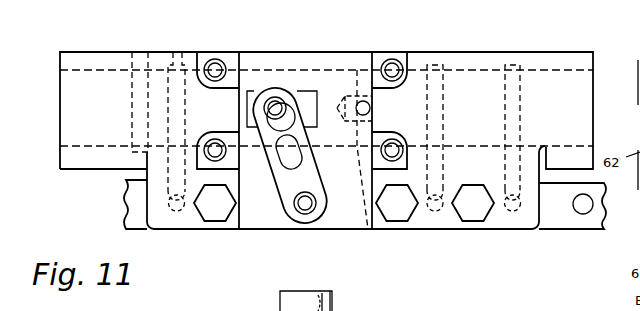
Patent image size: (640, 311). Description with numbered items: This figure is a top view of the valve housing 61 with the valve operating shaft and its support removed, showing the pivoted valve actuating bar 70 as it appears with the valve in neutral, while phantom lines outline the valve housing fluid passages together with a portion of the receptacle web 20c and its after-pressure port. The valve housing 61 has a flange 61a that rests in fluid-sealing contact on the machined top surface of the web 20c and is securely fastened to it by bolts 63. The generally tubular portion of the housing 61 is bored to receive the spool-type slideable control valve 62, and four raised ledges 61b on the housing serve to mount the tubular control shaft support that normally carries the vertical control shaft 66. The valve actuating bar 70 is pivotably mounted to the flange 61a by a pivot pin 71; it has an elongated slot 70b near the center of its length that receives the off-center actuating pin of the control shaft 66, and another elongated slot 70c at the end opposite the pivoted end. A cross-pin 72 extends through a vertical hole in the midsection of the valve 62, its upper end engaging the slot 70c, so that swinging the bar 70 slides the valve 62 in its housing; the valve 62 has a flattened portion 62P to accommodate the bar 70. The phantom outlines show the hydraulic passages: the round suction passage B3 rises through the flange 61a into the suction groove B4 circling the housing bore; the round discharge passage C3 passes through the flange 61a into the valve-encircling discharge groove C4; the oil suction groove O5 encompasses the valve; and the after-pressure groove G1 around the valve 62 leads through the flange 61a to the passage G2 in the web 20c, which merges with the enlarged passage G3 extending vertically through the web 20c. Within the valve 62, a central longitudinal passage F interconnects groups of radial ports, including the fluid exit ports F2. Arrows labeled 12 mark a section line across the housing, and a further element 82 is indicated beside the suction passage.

The section line 12 is at (118, 108).
The valve housing 61 is at (78, 167).
The flange of the valve housing 61a is at (160, 218).
The raised ledges 61b is at (233, 64).
The spool-type slideable control valve 62 is at (294, 80).
The flattened portion of the valve 62P is at (253, 91).
The bolts 63 is at (218, 213).
The valve actuating bar 70 is at (316, 192).
The elongated slot 70b is at (292, 163).
The elongated slot 70c is at (287, 118).
The pivot pin 71 is at (306, 208).
The cross-pin 72 is at (276, 102).
The stop member 82 is at (174, 64).
The web 20c is at (135, 212).
The control shaft 66 is at (280, 308).
The oil suction groove O5 is at (137, 94).
The round passage B3 is at (181, 208).
The suction groove B4 is at (175, 96).
The round passage C3 is at (437, 212).
The valve encircling discharge groove C4 is at (438, 87).
The groove G1 is at (515, 88).
The passage G2 is at (511, 213).
The enlarged passage G3 is at (580, 208).
The longitudinally extending passage F is at (366, 165).
The fluid exit ports F2 is at (364, 100).